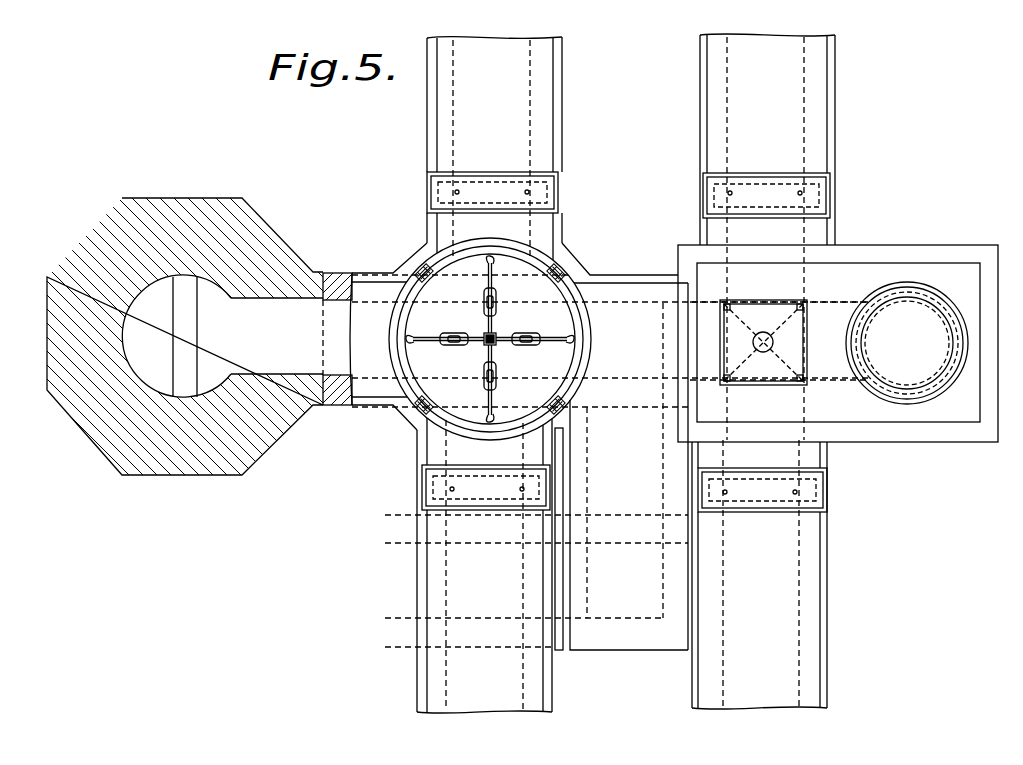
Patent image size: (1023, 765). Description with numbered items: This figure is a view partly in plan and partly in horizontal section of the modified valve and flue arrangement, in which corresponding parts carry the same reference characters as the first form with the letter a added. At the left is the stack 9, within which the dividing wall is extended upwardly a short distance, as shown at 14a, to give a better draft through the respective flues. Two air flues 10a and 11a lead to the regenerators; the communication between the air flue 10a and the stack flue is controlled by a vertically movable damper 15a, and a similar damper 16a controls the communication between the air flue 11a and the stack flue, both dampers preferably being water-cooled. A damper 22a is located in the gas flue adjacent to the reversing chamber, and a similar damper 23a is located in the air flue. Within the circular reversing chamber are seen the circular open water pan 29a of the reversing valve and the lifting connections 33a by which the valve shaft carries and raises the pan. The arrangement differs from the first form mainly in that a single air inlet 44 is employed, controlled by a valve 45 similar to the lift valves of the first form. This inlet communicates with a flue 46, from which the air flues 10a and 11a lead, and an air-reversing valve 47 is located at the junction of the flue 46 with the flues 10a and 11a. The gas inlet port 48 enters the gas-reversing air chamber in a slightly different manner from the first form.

The stack 9 is at (261, 359).
The upwardly extended dividing wall portion 14a is at (175, 331).
The air flue 10a is at (767, 237).
The air flue 11a is at (780, 592).
The damper 15a is at (760, 187).
The damper 16a is at (778, 496).
The damper 22a is at (487, 188).
The damper 23a is at (510, 492).
The water pan 29a is at (490, 339).
The lifting connections 33a is at (527, 346).
The air inlet 44 is at (907, 297).
The valve 45 is at (923, 320).
The flue 46 is at (851, 374).
The air-reversing valve 47 is at (812, 318).
The gas inlet port 48 is at (536, 466).